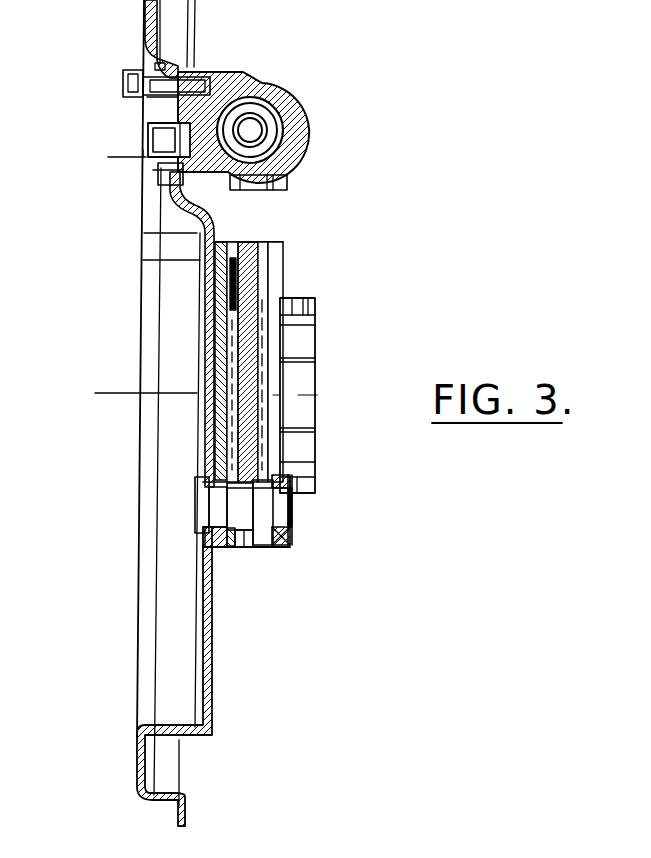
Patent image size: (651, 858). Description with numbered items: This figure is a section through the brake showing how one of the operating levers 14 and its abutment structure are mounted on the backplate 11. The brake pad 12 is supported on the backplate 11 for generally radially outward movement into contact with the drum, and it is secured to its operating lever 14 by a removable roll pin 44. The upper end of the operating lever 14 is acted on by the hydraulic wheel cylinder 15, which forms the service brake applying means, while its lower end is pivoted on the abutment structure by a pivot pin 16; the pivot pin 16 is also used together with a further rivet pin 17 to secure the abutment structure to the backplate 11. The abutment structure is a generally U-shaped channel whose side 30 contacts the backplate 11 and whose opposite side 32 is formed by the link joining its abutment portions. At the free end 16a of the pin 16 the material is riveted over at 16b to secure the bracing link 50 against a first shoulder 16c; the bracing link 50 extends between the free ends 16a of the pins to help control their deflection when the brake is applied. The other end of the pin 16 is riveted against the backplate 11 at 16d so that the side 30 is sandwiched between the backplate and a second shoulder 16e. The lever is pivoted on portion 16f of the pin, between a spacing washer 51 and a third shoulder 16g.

The backplate 11 is at (211, 664).
The brake pad 12 is at (300, 375).
The operating lever 14 is at (227, 355).
The hydraulic wheel cylinder 15 is at (280, 84).
The pivot pin 16 is at (313, 492).
The free end of pin 16a is at (275, 494).
The riveted-over portion 16b is at (295, 507).
The first shoulder 16c is at (292, 523).
The riveted end against backplate 16d is at (200, 500).
The second shoulder 16e is at (235, 510).
The lever-pivot portion of pin 16f is at (237, 518).
The third shoulder 16g is at (260, 533).
The rivet pin 17 is at (223, 280).
The side of abutment structure 30 is at (222, 377).
The opposite side of channel structure 32 is at (273, 292).
The removable roll pin 44 is at (227, 388).
The bracing link 50 is at (283, 537).
The spacing washer 51 is at (212, 477).